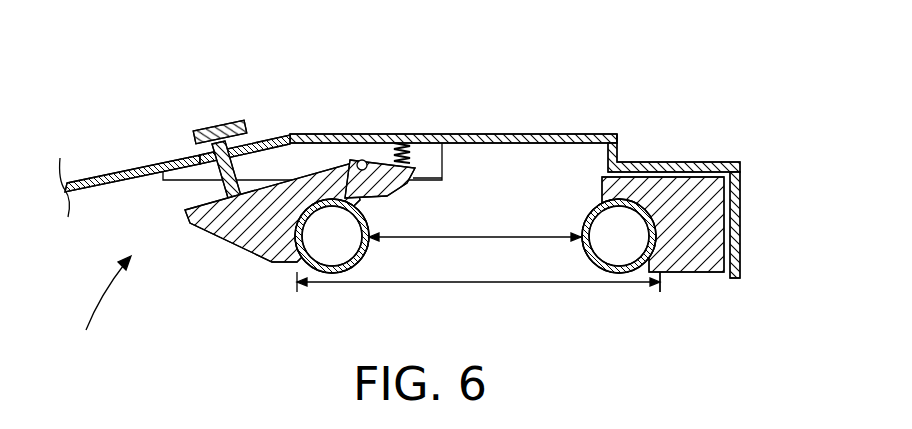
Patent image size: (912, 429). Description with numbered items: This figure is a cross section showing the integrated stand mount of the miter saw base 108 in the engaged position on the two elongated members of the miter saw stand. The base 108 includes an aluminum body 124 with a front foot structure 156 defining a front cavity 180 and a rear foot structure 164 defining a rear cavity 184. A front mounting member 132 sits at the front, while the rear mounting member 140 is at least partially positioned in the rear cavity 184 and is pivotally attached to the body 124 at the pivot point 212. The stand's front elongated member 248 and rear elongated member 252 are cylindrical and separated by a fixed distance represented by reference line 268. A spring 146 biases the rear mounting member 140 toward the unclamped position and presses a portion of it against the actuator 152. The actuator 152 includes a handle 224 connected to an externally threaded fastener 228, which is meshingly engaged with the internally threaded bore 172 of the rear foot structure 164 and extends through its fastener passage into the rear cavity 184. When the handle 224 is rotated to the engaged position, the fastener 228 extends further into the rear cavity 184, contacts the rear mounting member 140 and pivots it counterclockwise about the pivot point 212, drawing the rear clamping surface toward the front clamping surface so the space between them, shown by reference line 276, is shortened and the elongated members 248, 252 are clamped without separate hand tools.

The base 108 is at (470, 133).
The body 124 is at (535, 133).
The front mounting member 132 is at (700, 207).
The rear mounting member 140 is at (238, 235).
The spring 146 is at (398, 146).
The actuator 152 is at (210, 110).
The front foot structure 156 is at (740, 235).
The rear foot structure 164 is at (108, 173).
The internally threaded bore 172 is at (183, 157).
The front cavity 180 is at (650, 292).
The rear cavity 184 is at (87, 303).
The pivot point 212 is at (357, 160).
The handle 224 is at (218, 124).
The externally threaded fastener 228 is at (243, 128).
The front elongated member 248 is at (597, 212).
The rear elongated member 252 is at (360, 218).
The reference line 268 is at (465, 237).
The reference line 276 is at (395, 284).